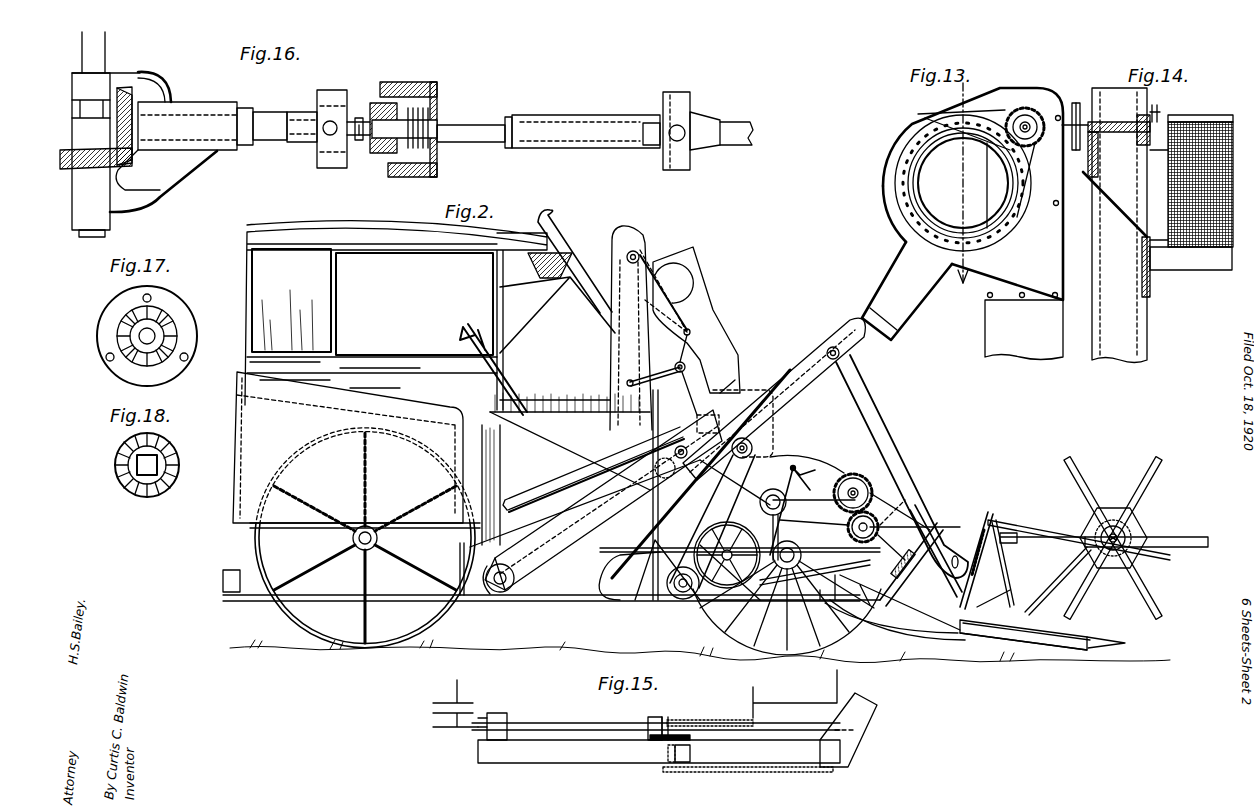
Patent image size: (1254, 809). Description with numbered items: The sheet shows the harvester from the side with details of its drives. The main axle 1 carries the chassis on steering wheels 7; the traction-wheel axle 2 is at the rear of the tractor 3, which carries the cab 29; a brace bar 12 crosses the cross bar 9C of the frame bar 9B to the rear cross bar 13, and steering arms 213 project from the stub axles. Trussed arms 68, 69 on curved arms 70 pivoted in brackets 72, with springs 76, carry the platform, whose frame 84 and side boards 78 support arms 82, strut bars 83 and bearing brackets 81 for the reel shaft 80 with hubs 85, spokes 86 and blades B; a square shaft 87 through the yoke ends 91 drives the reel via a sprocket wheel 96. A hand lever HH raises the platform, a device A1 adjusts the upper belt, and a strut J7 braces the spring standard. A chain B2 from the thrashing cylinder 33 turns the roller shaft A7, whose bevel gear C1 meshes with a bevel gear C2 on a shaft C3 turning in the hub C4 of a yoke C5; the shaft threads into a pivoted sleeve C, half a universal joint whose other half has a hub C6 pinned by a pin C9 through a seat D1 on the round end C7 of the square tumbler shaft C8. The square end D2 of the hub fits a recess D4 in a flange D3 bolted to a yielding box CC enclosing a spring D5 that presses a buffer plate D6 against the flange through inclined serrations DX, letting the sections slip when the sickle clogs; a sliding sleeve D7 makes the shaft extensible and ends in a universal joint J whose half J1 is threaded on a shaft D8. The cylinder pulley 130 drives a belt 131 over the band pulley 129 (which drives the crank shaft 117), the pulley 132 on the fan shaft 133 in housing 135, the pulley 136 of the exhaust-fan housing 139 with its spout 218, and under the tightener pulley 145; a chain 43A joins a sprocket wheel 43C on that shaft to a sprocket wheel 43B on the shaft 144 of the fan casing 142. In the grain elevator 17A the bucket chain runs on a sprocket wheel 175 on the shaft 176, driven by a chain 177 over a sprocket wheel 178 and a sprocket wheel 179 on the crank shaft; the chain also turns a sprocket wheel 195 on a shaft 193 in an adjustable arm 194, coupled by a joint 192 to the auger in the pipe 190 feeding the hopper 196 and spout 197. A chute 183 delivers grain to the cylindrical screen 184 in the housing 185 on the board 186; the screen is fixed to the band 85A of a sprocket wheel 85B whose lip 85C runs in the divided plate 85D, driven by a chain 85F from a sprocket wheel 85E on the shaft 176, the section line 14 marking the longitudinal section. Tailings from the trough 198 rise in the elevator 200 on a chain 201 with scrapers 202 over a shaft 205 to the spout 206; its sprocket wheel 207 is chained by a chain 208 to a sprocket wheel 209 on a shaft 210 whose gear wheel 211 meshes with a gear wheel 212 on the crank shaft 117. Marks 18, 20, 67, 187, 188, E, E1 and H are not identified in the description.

In FIG. 16, the roller shaft A7 is at (92, 60).
In FIG. 16, the bevel gear C1 is at (95, 170).
In FIG. 2, the bevel gear C1 is at (875, 495).
In FIG. 16, the bevel gear C2 is at (140, 86).
In FIG. 16, the shaft C3 is at (267, 133).
In FIG. 2, the shaft C3 is at (880, 583).
In FIG. 16, the hub portion of yoke C4 is at (203, 108).
In FIG. 2, the hub portion of yoke C4 is at (875, 520).
In FIG. 16, the yoke C5 is at (165, 187).
In FIG. 2, the yoke C5 is at (880, 535).
In FIG. 16, the pivoted sleeve C is at (293, 114).
In FIG. 16, the hub portion C6 is at (353, 162).
In FIG. 16, the reduced round end portion C7 is at (356, 166).
In FIG. 16, the square shaft C8 is at (460, 127).
In FIG. 16, the pin C9 is at (358, 142).
In FIG. 16, the resiliently yielding box CC is at (443, 107).
In FIG. 16, the seat D1 is at (353, 105).
In FIG. 16, the square terminal end portion D2 is at (400, 110).
In FIG. 16, the flange D3 is at (385, 82).
In FIG. 17, the flange D3 is at (178, 305).
In FIG. 16, the square recess D4 is at (400, 177).
In FIG. 16, the spring D5 is at (428, 152).
In FIG. 16, the buffer plate D6 is at (420, 162).
In FIG. 18, the buffer plate D6 is at (122, 448).
In FIG. 16, the sliding sleeve D7 is at (573, 117).
In FIG. 16, the shaft D8 is at (743, 147).
In FIG. 17, the inclined serrations DX is at (139, 336).
In FIG. 18, the inclined serrations DX is at (130, 478).
In FIG. 16, the universal joint J is at (676, 120).
In FIG. 16, the universal joint half J1 is at (693, 110).
In FIG. 2, the strut J7 is at (690, 528).
In FIG. 2, the main axle 1 is at (778, 570).
In FIG. 2, the traction wheel supporting axle 2 is at (353, 540).
In FIG. 2, the tractor 3 is at (435, 458).
In FIG. 2, the wheels 7 is at (800, 465).
In FIG. 2, the brace bar 12 is at (578, 608).
In FIG. 2, the cross bar 13 is at (225, 575).
In FIG. 2, the sprocket 18 is at (850, 522).
In FIG. 2, the bearing plate 20 is at (775, 425).
In FIG. 2, the cab 29 is at (396, 315).
In FIG. 2, the thrashing cylinder 33 is at (820, 464).
In FIG. 15, the chain 43A is at (700, 720).
In FIG. 2, the chain 43A is at (693, 605).
In FIG. 15, the sprocket wheel 43B is at (757, 725).
In FIG. 15, the sprocket wheel 43C is at (665, 718).
In FIG. 2, the frame strut 67 is at (895, 598).
In FIG. 2, the trussed arm 68 is at (905, 630).
In FIG. 2, the trussed arm 69 is at (880, 625).
In FIG. 2, the curved arms 70 is at (840, 530).
In FIG. 2, the brackets 72 is at (1002, 594).
In FIG. 2, the coiled springs 76 is at (852, 475).
In FIG. 2, the rear edge side boards 78 is at (998, 575).
In FIG. 2, the reel shaft 80 is at (1148, 539).
In FIG. 2, the bearing brackets 81 is at (1097, 534).
In FIG. 2, the metal arms 82 is at (1020, 525).
In FIG. 2, the strut bars 83 is at (1062, 570).
In FIG. 2, the frame of the platform 84 is at (368, 648).
In FIG. 2, the hubs 85 is at (1115, 522).
In FIG. 2, the spokes 86 is at (1083, 496).
In FIG. 2, the square shaft 87 is at (1010, 543).
In FIG. 2, the yoke ends 91 is at (978, 545).
In FIG. 2, the sprocket wheel 96 is at (990, 510).
In FIG. 15, the crank shaft 117 is at (653, 718).
In FIG. 2, the crank shaft 117 is at (634, 488).
In FIG. 2, the band pulley 129 is at (730, 524).
In FIG. 2, the pulley 130 is at (773, 515).
In FIG. 2, the belt 131 is at (668, 484).
In FIG. 2, the pulley 132 is at (680, 600).
In FIG. 15, the blower fan shaft 133 is at (690, 735).
In FIG. 2, the blower fan housing 135 is at (655, 600).
In FIG. 2, the pulley 136 is at (756, 447).
In FIG. 2, the exhaust fan housing 139 is at (790, 430).
In FIG. 2, the blower fan casing 142 is at (750, 590).
In FIG. 15, the fan shaft 144 is at (752, 716).
In FIG. 2, the idle pulley 145 is at (770, 500).
In FIG. 13, the sprocket wheel 175 is at (1070, 120).
In FIG. 13, the upper elevator shaft 176 is at (1012, 113).
In FIG. 2, the sprocket chain 177 is at (612, 318).
In FIG. 2, the sprocket wheel 178 is at (640, 250).
In FIG. 2, the sprocket wheel 179 is at (595, 458).
In FIG. 14, the inclined chute 183 is at (1125, 205).
In FIG. 13, the cylindrical screen 184 is at (920, 200).
In FIG. 14, the cylindrical screen 184 is at (1205, 135).
In FIG. 13, the screen housing 185 is at (883, 187).
In FIG. 14, the screen housing 185 is at (1205, 272).
In FIG. 13, the board 186 is at (1038, 303).
In FIG. 14, the board 186 is at (1152, 297).
In FIG. 2, the board 186 is at (703, 280).
In FIG. 13, the discharge chute 187 is at (918, 295).
In FIG. 2, the arm 188 is at (733, 357).
In FIG. 2, the inclined pipe 190 is at (575, 232).
In FIG. 2, the universal joint 192 is at (688, 335).
In FIG. 2, the shaft 193 is at (672, 372).
In FIG. 2, the arm 194 is at (630, 384).
In FIG. 2, the sprocket wheel 195 is at (686, 367).
In FIG. 2, the hopper 196 is at (563, 278).
In FIG. 2, the spout 197 is at (575, 312).
In FIG. 15, the trough 198 is at (500, 713).
In FIG. 15, the tailings elevator 200 is at (573, 758).
In FIG. 2, the tailings elevator 200 is at (566, 531).
In FIG. 2, the endless chain 201 is at (508, 592).
In FIG. 2, the scrapers 202 is at (492, 592).
In FIG. 13, the shaft 205 is at (855, 358).
In FIG. 2, the shaft 205 is at (548, 580).
In FIG. 15, the spout 206 is at (872, 722).
In FIG. 2, the spout 206 is at (870, 395).
In FIG. 15, the sprocket wheel 207 is at (832, 774).
In FIG. 2, the sprocket wheel 207 is at (834, 345).
In FIG. 15, the chain 208 is at (757, 772).
In FIG. 2, the chain 208 is at (760, 385).
In FIG. 15, the sprocket wheel 209 is at (668, 764).
In FIG. 2, the sprocket wheel 209 is at (703, 415).
In FIG. 15, the shaft 210 is at (690, 755).
In FIG. 2, the shaft 210 is at (680, 446).
In FIG. 15, the gear wheel 211 is at (735, 745).
In FIG. 15, the gear wheel 212 is at (655, 740).
In FIG. 2, the forwardly projecting arms 213 is at (835, 600).
In FIG. 2, the spout 218 is at (556, 498).
In FIG. 15, the frame bar 9B is at (452, 730).
In FIG. 2, the frame bar 9B is at (545, 518).
In FIG. 2, the cross bar 9C is at (460, 567).
In FIG. 13, the section line 14 is at (962, 179).
In FIG. 13, the vertical elevator housing 17A is at (1038, 350).
In FIG. 14, the vertical elevator housing 17A is at (1118, 350).
In FIG. 2, the vertical elevator housing 17A is at (612, 348).
In FIG. 14, the band portion 85A is at (1188, 247).
In FIG. 13, the sprocket wheel 85B is at (905, 225).
In FIG. 14, the sprocket wheel 85B is at (1145, 267).
In FIG. 14, the annular lip 85C is at (1150, 150).
In FIG. 14, the divided circular plate 85D is at (1152, 184).
In FIG. 13, the sprocket wheel 85E is at (1030, 118).
In FIG. 14, the sprocket wheel 85E is at (1160, 118).
In FIG. 13, the sprocket chain 85F is at (958, 115).
In FIG. 2, the adjusting device A1 is at (895, 548).
In FIG. 2, the blades B is at (1084, 468).
In FIG. 2, the sprocket chain B2 is at (908, 500).
In FIG. 2, the frame member E is at (834, 564).
In FIG. 2, the runner E1 is at (960, 632).
In FIG. 2, the shaft H is at (815, 571).
In FIG. 2, the hand operating lever HH is at (482, 372).